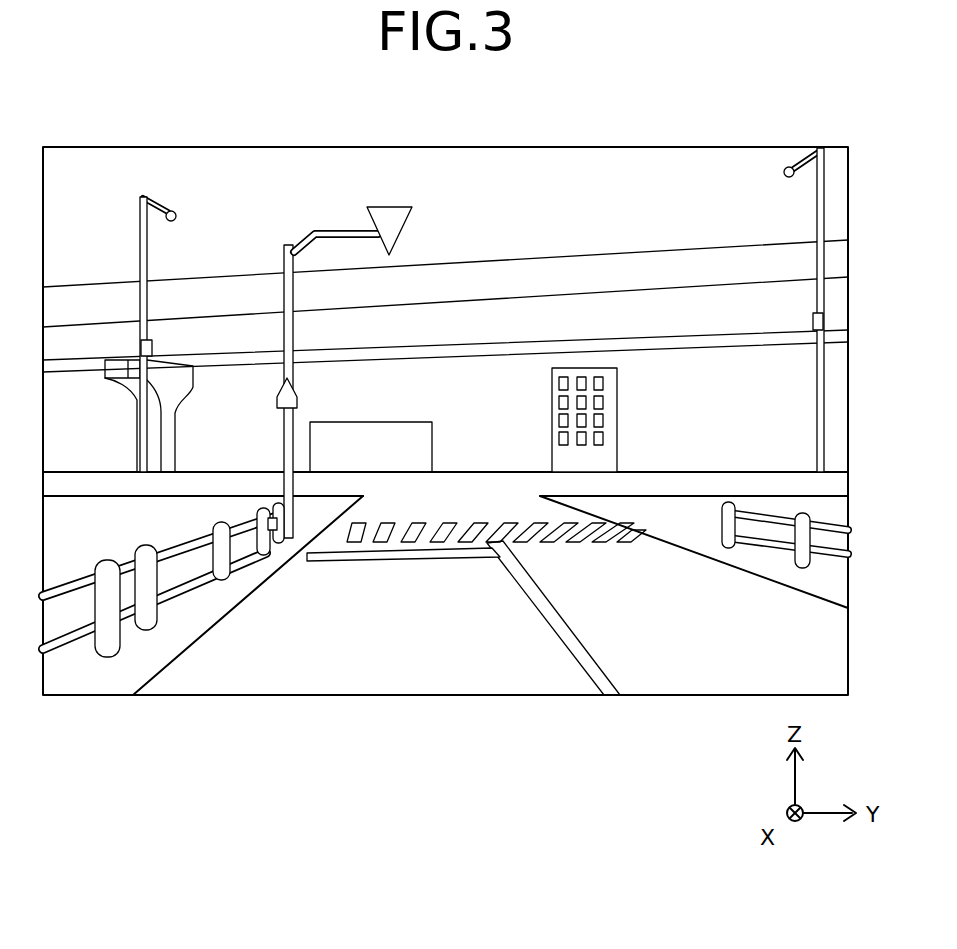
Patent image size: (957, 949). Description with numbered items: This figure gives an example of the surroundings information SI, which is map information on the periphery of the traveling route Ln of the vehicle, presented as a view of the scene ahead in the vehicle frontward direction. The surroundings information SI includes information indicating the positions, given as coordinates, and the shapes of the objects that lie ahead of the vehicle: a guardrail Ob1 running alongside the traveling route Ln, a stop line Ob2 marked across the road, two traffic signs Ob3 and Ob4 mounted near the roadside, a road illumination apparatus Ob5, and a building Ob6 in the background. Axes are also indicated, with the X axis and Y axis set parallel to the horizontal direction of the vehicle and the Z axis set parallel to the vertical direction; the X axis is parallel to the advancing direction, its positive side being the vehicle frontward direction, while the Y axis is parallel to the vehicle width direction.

The surroundings information SI is at (763, 147).
The guardrail Ob1 is at (145, 545).
The stop line Ob2 is at (468, 561).
The traffic sign Ob3 is at (276, 400).
The traffic sign Ob4 is at (384, 206).
The road illumination apparatus Ob5 is at (148, 206).
The building Ob6 is at (617, 393).
The traveling route Ln is at (426, 659).